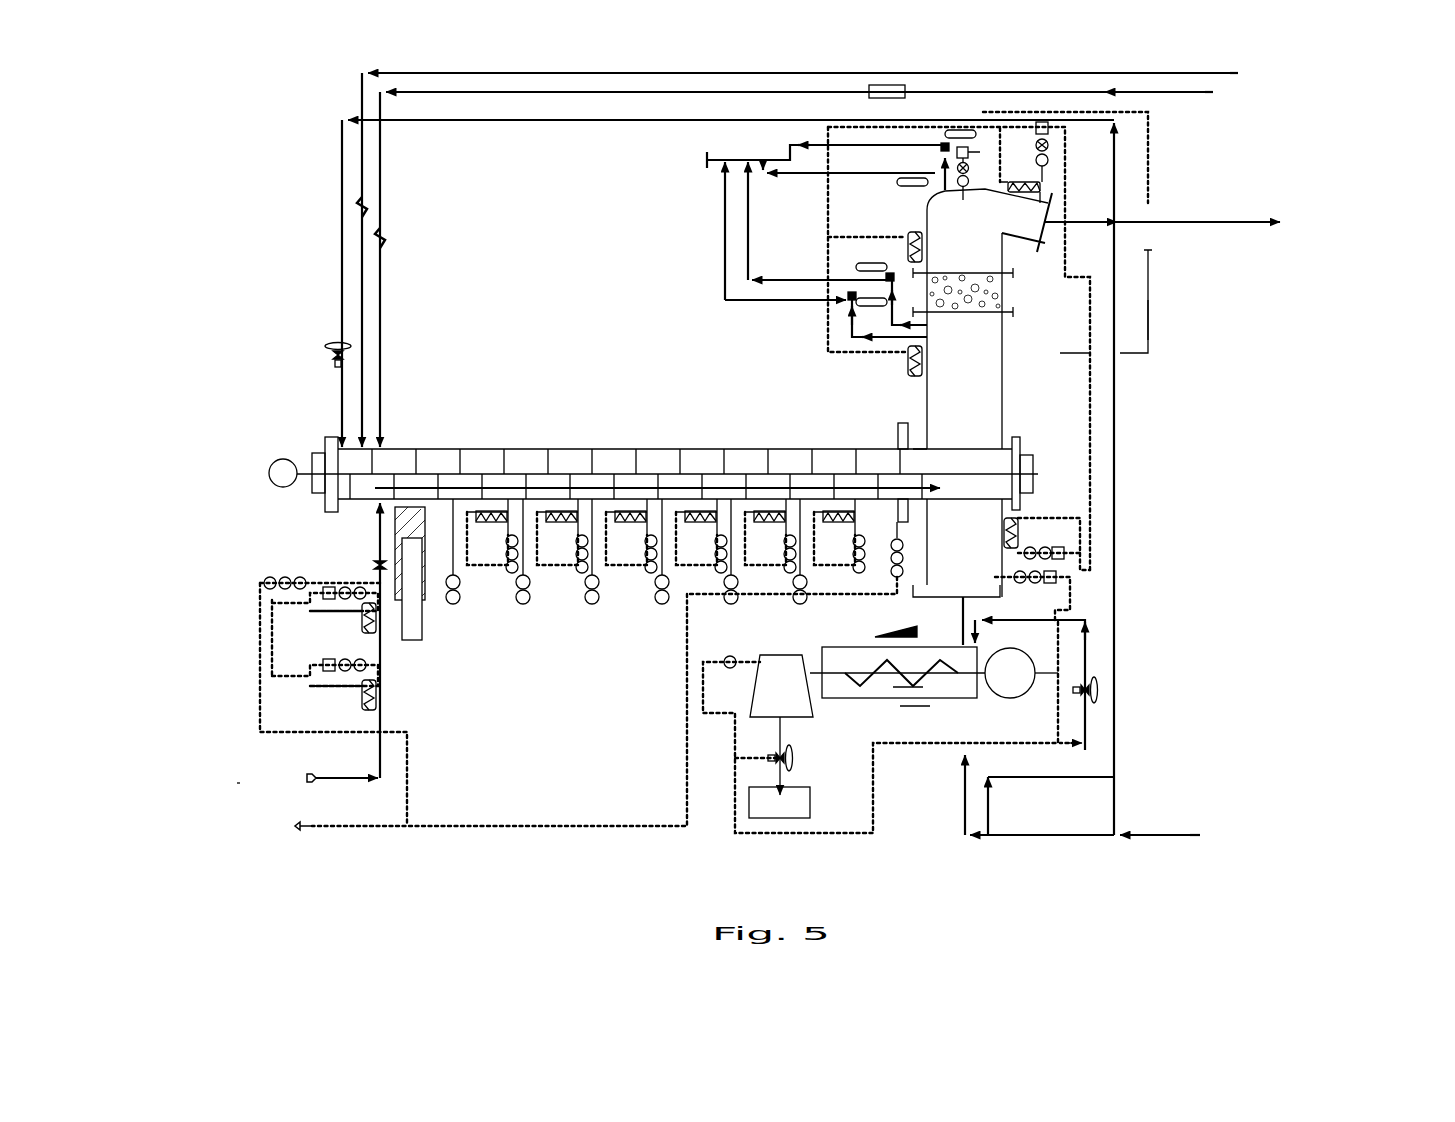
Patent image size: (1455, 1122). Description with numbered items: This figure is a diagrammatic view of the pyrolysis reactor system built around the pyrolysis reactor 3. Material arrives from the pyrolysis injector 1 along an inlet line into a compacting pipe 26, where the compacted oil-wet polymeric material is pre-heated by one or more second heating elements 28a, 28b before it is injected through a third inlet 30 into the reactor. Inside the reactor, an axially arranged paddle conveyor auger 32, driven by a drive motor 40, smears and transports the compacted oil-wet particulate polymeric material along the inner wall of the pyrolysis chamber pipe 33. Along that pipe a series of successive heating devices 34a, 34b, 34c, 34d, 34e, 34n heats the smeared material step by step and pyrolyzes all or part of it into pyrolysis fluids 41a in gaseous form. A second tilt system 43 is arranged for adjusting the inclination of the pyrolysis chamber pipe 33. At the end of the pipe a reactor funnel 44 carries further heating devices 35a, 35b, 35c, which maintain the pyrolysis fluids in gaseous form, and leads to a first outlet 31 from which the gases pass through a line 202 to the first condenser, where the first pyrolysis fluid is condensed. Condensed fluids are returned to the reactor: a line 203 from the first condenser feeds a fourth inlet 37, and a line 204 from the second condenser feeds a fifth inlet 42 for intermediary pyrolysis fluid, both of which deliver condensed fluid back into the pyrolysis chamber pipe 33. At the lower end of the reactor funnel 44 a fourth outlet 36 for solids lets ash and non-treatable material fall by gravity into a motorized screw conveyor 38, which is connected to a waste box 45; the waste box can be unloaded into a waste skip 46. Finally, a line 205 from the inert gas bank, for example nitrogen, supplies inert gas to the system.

The pyrolysis reactor 3 is at (512, 230).
The reactor funnel 44 is at (957, 222).
The pyrolysis chamber pipe 33 is at (455, 447).
The paddle conveyor auger 32 is at (528, 482).
The drive motor for paddle conveyor auger 40 is at (271, 461).
The fourth inlet 37 is at (355, 432).
The fifth inlet 42 is at (388, 432).
The third inlet 30 is at (372, 507).
The compacting pipe 26 is at (382, 782).
The pyrolysis injector 1 is at (302, 778).
The second heating element 28a is at (350, 626).
The second heating element 28b is at (351, 703).
The second tilt system 43 is at (416, 648).
The successive heating element 34a is at (483, 525).
The successive heating element 34b is at (563, 525).
The successive heating element 34c is at (632, 525).
The successive heating element 34d is at (704, 525).
The successive heating element 34e is at (771, 525).
The successive heating element 34n is at (836, 525).
The heating device 35a is at (1018, 172).
The heating device 35b is at (903, 248).
The heating device 35c is at (903, 372).
The first outlet 31 is at (1055, 221).
The third pyrolysis fluid 41a is at (1164, 287).
The line to first condenser 202 is at (1355, 248).
The line from first condenser 203 is at (1238, 73).
The line from second condenser 204 is at (899, 266).
The fourth outlet for solids 36 is at (974, 601).
The motorized screw conveyor 38 is at (949, 682).
The waste box 45 is at (792, 700).
The waste skip 46 is at (784, 805).
The line from inert gas bank 205 is at (1173, 498).